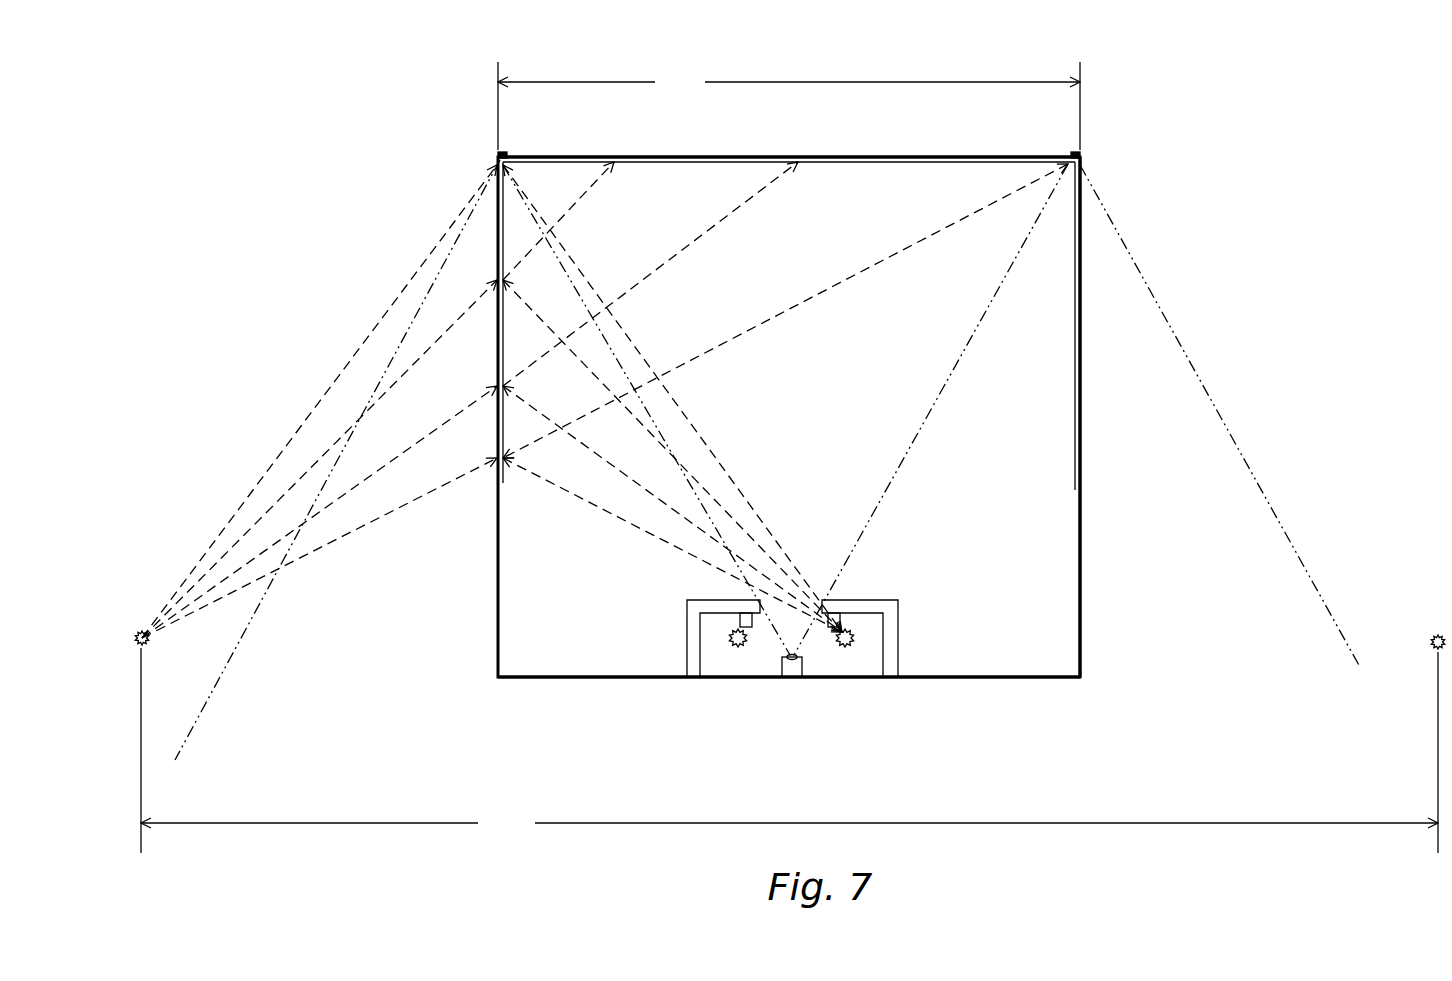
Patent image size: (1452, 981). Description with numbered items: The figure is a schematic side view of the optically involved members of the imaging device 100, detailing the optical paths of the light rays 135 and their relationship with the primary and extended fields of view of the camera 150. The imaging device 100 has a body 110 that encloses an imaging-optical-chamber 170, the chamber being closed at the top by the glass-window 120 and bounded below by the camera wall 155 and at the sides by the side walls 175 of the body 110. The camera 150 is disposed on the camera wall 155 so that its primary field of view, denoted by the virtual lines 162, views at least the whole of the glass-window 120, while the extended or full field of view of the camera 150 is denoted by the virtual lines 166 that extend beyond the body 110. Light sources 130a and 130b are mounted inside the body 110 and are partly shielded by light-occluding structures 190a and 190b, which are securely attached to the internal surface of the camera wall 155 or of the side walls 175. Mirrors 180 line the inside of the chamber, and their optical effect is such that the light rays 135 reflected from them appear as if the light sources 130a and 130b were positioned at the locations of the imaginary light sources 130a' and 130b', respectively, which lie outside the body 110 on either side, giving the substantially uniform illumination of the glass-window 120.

The imaging device 100 is at (442, 132).
The body 110 is at (493, 625).
The glass-window 120 is at (928, 157).
The light source 130a is at (698, 687).
The light source 130b is at (877, 687).
The imaginary light source 130a' is at (145, 594).
The imaginary light source 130b' is at (1408, 688).
The light rays 135 is at (729, 475).
The camera 150 is at (791, 667).
The camera wall 155 is at (1015, 680).
The virtual lines 162 is at (955, 360).
The virtual lines 166 is at (1189, 369).
The imaging-optical-chamber 170 is at (832, 215).
The side walls 175 is at (1081, 650).
The mirrors 180 is at (503, 465).
The light-occluding structure 190a is at (693, 640).
The light-occluding structure 190b is at (898, 640).